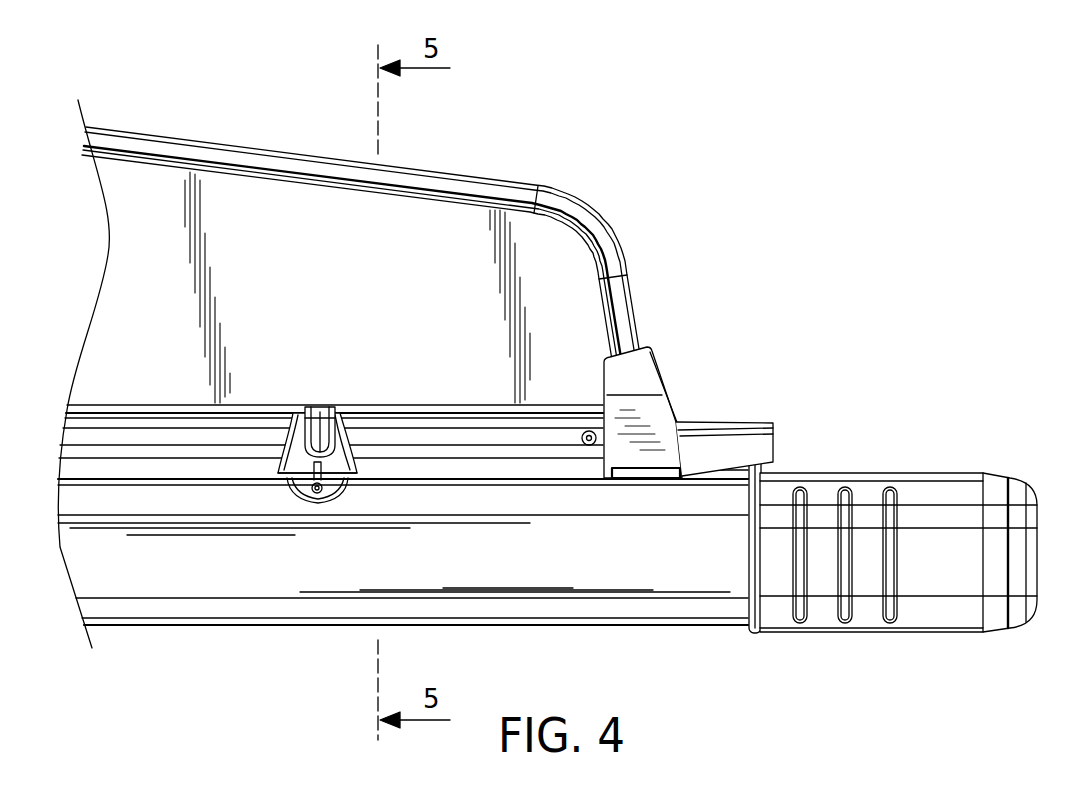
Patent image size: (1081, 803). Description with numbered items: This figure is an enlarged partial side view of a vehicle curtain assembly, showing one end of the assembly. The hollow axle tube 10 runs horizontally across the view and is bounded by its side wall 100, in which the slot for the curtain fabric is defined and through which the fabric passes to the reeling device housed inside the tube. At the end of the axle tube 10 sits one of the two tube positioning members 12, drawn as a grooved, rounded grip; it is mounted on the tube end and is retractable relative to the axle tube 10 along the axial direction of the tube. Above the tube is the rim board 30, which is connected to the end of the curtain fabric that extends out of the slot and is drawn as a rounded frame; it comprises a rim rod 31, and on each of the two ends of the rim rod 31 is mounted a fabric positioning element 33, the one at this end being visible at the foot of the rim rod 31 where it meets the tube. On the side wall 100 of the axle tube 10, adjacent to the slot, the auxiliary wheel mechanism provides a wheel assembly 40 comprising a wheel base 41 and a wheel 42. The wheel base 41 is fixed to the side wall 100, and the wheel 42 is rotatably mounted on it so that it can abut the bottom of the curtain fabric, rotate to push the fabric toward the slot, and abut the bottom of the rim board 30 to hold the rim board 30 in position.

The axle tube 10 is at (647, 636).
The tube positioning member 12 is at (874, 468).
The rim board 30 is at (464, 156).
The rim rod 31 is at (528, 418).
The fabric positioning element 33 is at (647, 482).
The wheel assembly 40 is at (346, 502).
The wheel base 41 is at (303, 484).
The wheel 42 is at (318, 416).
The side wall 100 is at (420, 492).